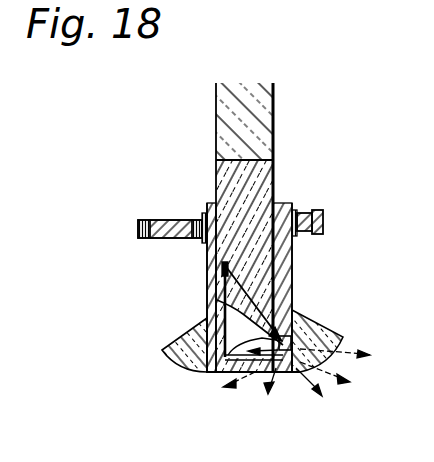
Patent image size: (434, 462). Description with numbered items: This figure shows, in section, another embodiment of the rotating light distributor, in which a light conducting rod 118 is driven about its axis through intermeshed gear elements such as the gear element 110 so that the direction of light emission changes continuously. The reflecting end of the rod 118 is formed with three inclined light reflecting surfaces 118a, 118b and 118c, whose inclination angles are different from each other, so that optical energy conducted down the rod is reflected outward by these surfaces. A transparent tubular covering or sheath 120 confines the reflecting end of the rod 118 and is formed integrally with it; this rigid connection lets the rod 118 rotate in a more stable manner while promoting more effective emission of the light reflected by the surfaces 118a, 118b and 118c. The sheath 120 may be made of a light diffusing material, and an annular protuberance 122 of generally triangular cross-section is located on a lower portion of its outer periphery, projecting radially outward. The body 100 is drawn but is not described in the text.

The body 100 is at (276, 108).
The light conducting rod 118 is at (276, 178).
The inclined light reflecting surface 118a is at (153, 220).
The inclined light reflecting surface 118b is at (217, 304).
The inclined light reflecting surface 118c is at (224, 371).
The gear element 110 is at (323, 232).
The transparent tubular covering or sheath 120 is at (293, 277).
The annular protuberance 122 is at (328, 327).